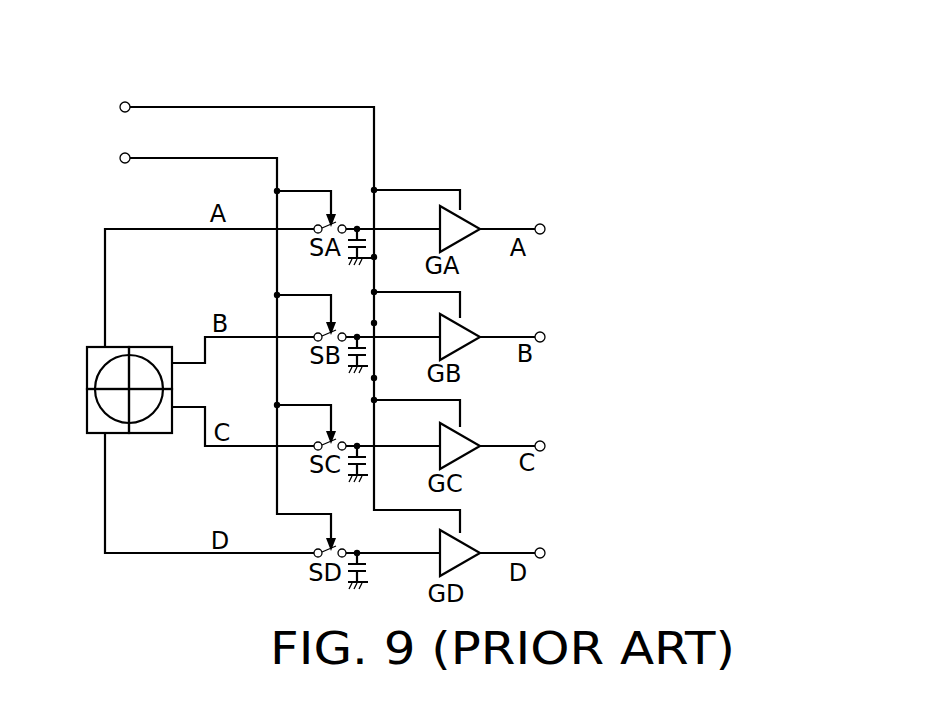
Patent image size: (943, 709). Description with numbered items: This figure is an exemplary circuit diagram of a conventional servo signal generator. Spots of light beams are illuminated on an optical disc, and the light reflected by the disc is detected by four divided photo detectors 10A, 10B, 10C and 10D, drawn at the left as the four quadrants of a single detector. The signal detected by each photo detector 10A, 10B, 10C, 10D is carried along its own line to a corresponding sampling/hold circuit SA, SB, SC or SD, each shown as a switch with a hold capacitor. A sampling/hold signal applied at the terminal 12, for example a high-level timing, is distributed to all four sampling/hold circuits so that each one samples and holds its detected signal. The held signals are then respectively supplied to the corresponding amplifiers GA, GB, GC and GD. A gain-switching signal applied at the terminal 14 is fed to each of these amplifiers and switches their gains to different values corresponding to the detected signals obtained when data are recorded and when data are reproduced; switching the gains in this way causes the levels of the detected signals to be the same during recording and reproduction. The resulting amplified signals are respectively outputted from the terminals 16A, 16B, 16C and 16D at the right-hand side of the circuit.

The terminal 14 is at (120, 104).
The terminal 12 is at (120, 156).
The photo detector 10A is at (100, 354).
The photo detector 10B is at (151, 355).
The photo detector 10C is at (150, 425).
The photo detector 10D is at (92, 425).
The terminal 16A is at (545, 228).
The terminal 16B is at (545, 336).
The terminal 16C is at (545, 445).
The terminal 16D is at (545, 552).